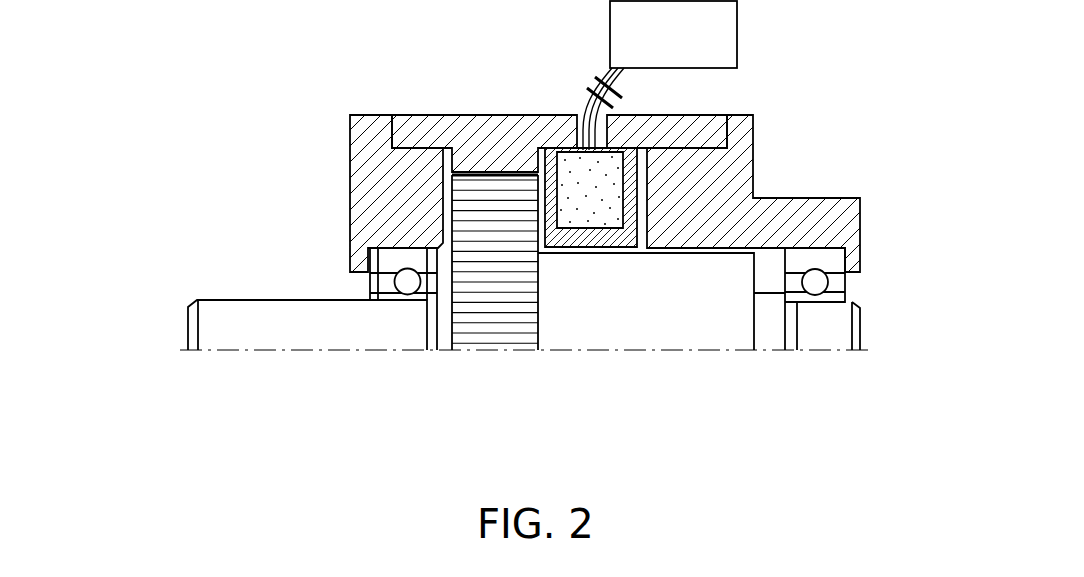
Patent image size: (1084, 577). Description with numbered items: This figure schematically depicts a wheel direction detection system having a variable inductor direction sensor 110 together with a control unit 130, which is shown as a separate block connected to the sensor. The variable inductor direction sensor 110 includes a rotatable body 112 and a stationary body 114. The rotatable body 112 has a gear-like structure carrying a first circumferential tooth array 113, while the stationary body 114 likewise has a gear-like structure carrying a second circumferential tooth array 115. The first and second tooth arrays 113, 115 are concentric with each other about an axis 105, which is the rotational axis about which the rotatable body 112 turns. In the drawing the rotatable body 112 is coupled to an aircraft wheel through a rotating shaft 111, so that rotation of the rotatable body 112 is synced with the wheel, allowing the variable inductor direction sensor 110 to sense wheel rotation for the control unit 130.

The axis 105 is at (643, 350).
The variable inductor direction sensor 110 is at (543, 151).
The rotating shaft 111 is at (272, 322).
The rotatable body 112 is at (493, 338).
The first circumferential tooth array 113 is at (527, 177).
The stationary body 114 is at (483, 111).
The second circumferential tooth array 115 is at (458, 177).
The control unit 130 is at (660, 75).